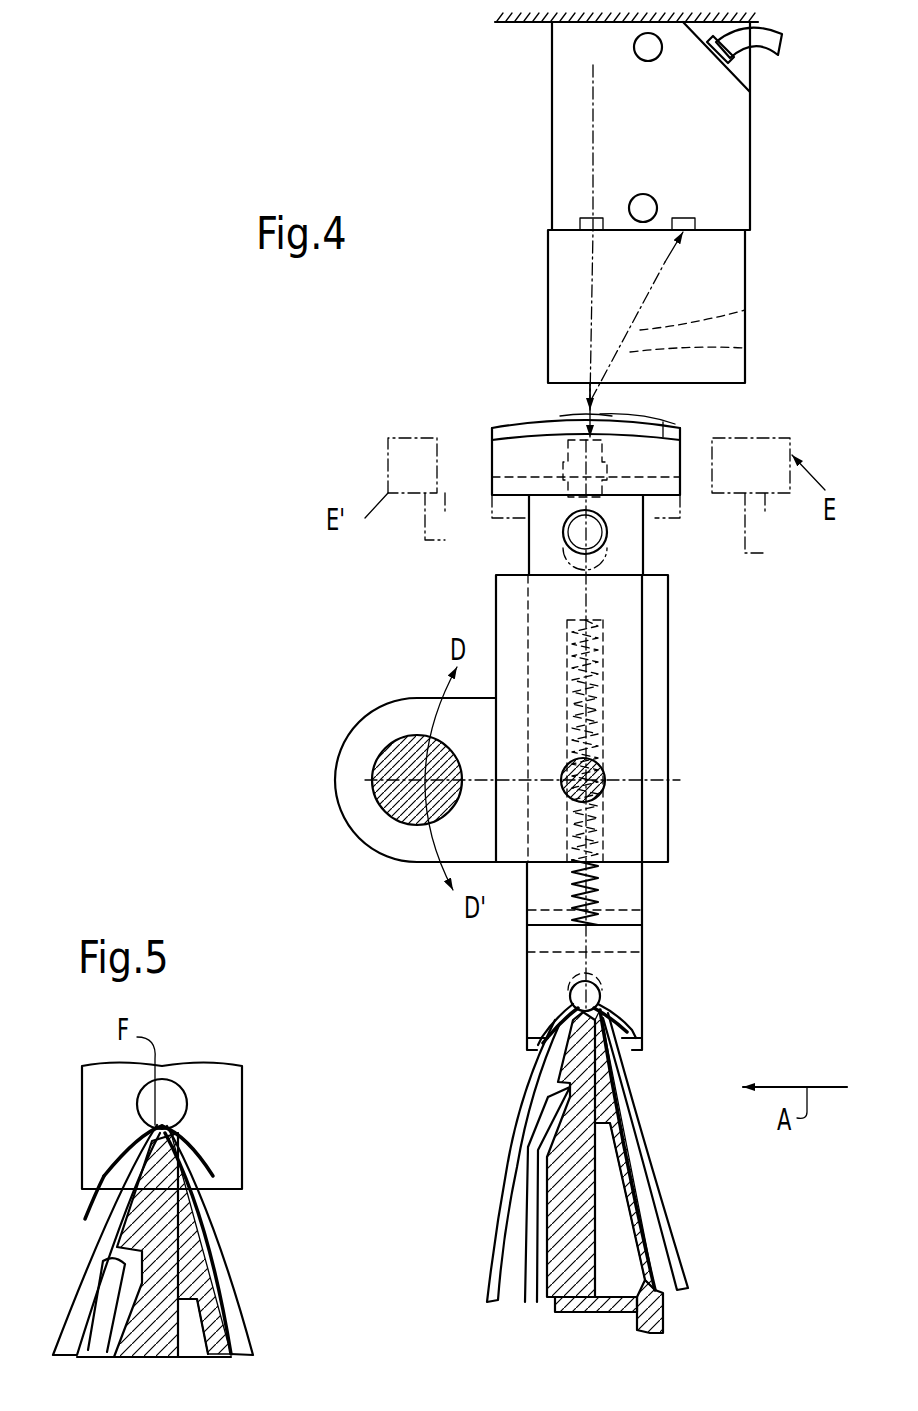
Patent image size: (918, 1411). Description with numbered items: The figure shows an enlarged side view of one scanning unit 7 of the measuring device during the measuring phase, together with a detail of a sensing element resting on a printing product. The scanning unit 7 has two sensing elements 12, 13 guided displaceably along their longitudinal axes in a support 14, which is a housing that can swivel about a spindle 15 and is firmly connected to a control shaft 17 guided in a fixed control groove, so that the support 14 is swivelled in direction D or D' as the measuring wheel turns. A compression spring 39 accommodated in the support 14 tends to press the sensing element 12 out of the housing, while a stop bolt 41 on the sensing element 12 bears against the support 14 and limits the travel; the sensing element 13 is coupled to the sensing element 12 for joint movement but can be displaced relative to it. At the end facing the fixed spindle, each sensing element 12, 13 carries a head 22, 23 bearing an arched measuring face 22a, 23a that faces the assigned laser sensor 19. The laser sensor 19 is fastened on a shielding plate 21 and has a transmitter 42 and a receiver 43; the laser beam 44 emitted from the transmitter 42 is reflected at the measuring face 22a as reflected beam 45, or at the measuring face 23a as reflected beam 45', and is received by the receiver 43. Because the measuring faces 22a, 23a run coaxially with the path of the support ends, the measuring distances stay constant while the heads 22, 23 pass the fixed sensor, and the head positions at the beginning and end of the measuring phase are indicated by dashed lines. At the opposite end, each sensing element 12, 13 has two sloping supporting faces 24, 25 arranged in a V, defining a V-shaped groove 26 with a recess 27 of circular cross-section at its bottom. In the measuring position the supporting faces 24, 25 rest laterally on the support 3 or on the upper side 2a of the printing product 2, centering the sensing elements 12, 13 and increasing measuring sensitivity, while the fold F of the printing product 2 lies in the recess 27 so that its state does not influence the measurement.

In FIG. 4, the laser sensor 19 is at (733, 158).
In FIG. 4, the shielding plate 21 is at (557, 315).
In FIG. 4, the laser beam 44 is at (575, 270).
In FIG. 4, the transmitter 42 is at (584, 218).
In FIG. 4, the receiver 43 is at (690, 218).
In FIG. 4, the reflected laser beam 45 is at (716, 304).
In FIG. 4, the reflected laser beam 45' is at (713, 354).
In FIG. 4, the head 23 is at (498, 428).
In FIG. 4, the measuring face 23a is at (516, 418).
In FIG. 4, the measuring face 22a is at (665, 422).
In FIG. 4, the head 22 is at (660, 452).
In FIG. 4, the scanning unit 7 is at (680, 805).
In FIG. 4, the stop bolt 41 is at (600, 528).
In FIG. 4, the support 14 is at (670, 650).
In FIG. 4, the control shaft 17 is at (380, 752).
In FIG. 4, the spindle 15 is at (605, 775).
In FIG. 4, the compression spring 39 is at (600, 882).
In FIG. 4, the sensing element 13 is at (645, 915).
In FIG. 5, the sensing element 13 is at (227, 1091).
In FIG. 4, the sensing element 12 is at (530, 972).
In FIG. 4, the recess 27 is at (647, 970).
In FIG. 5, the recess 27 is at (171, 1094).
In FIG. 4, the supporting face 24 is at (548, 1027).
In FIG. 5, the supporting face 24 is at (104, 1176).
In FIG. 4, the supporting face 25 is at (605, 1023).
In FIG. 5, the supporting face 25 is at (213, 1176).
In FIG. 5, the groove 26 is at (117, 1165).
In FIG. 4, the printing product 2 is at (497, 1213).
In FIG. 5, the printing product 2 is at (69, 1299).
In FIG. 4, the upper side 2a is at (528, 1100).
In FIG. 5, the upper side 2a is at (231, 1267).
In FIG. 4, the support 3 is at (675, 1313).
In FIG. 5, the support 3 is at (189, 1247).